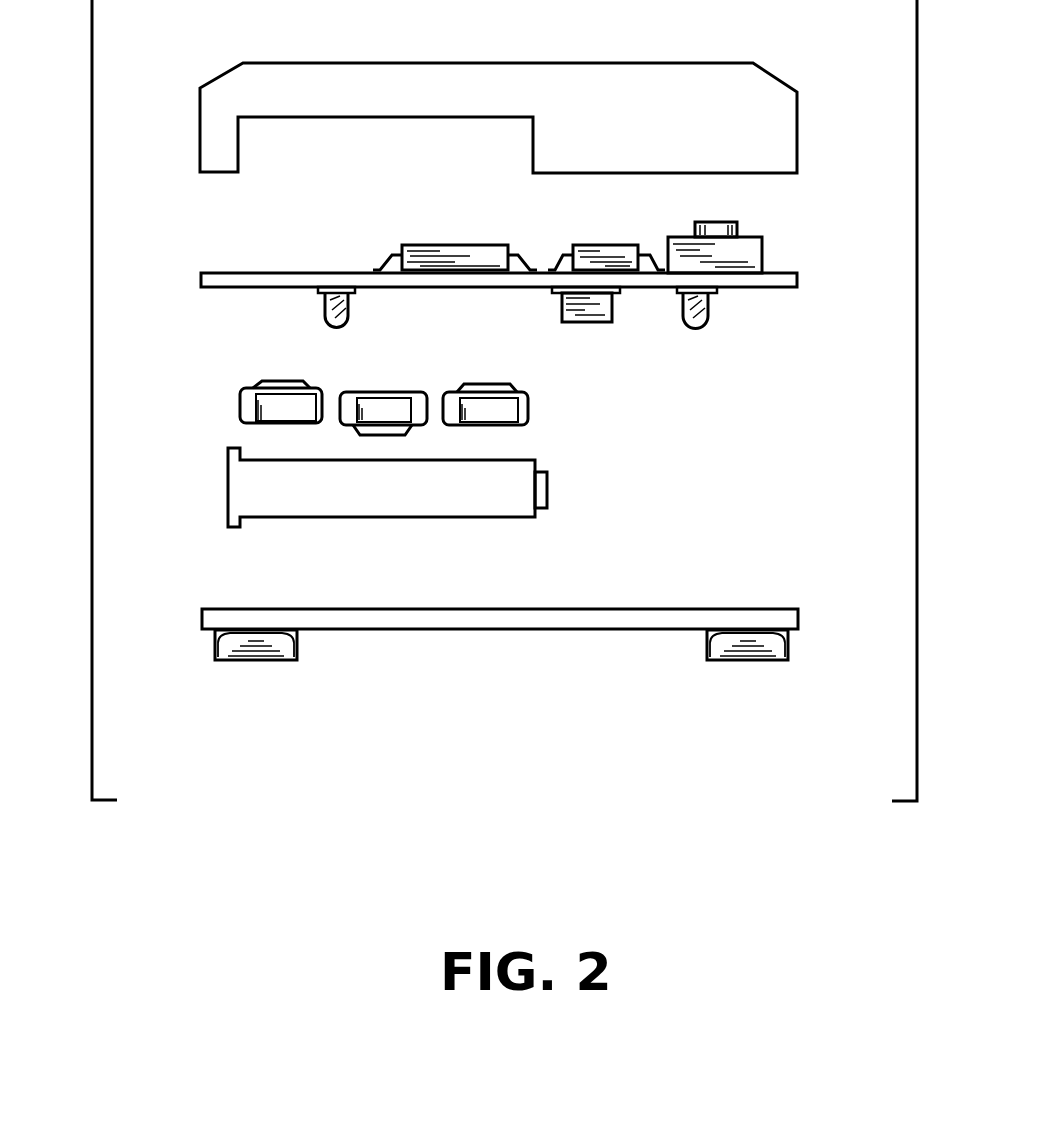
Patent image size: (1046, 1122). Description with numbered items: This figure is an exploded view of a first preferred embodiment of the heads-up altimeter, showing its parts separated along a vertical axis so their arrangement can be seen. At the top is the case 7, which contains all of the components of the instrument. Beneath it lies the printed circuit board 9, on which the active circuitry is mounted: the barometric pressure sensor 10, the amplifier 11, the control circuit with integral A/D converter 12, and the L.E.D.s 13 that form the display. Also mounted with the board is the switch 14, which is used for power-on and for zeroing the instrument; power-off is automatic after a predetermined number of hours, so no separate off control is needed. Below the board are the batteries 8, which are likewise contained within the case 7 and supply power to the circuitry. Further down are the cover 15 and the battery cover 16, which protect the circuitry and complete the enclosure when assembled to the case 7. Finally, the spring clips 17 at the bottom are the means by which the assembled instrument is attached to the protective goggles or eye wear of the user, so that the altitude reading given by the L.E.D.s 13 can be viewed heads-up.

The case 7 is at (677, 80).
The batteries 8 is at (480, 385).
The printed circuit board 9 is at (278, 279).
The barometric pressure sensor 10 is at (580, 313).
The amplifier 11 is at (597, 252).
The control circuit with integral A/D converter 12 is at (453, 253).
The L.E.D.s 13 is at (340, 305).
The switch 14 is at (727, 248).
The cover 15 is at (578, 618).
The battery cover 16 is at (522, 495).
The spring clips 17 is at (713, 647).